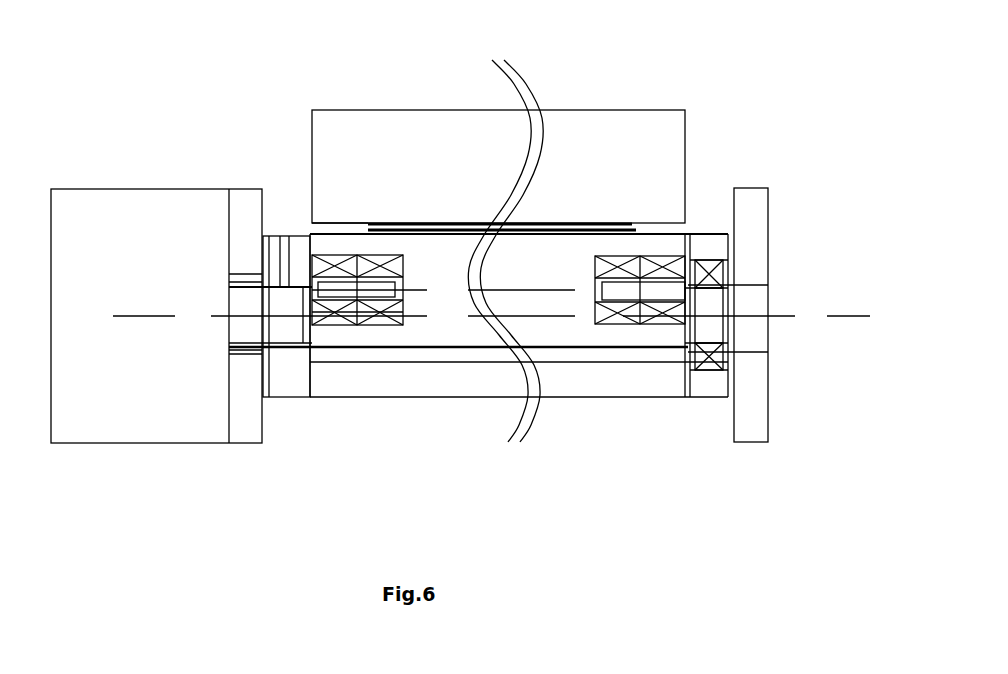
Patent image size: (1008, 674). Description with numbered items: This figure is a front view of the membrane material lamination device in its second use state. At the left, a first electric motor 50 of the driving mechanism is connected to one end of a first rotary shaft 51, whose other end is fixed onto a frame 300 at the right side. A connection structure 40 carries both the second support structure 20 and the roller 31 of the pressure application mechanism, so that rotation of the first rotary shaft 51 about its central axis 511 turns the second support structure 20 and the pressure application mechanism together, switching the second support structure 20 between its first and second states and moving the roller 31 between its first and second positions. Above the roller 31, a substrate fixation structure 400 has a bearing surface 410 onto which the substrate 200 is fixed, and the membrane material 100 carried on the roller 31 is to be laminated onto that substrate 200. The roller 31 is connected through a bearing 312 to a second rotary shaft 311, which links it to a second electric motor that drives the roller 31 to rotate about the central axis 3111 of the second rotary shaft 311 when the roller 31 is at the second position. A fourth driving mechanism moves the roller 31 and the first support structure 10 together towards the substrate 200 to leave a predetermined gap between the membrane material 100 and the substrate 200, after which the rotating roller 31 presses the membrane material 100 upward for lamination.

The first support structure 10 is at (310, 233).
The second support structure 20 is at (665, 379).
The roller 31 is at (657, 247).
The second rotary shaft 311 is at (373, 295).
The bearing 312 is at (332, 313).
The central axis of the second rotary shaft 3111 is at (520, 290).
The connection structure 40 is at (557, 355).
The first electric motor 50 is at (165, 237).
The first rotary shaft 51 is at (710, 303).
The central axis of the first rotary shaft 511 is at (522, 316).
The membrane material 100 is at (637, 229).
The substrate 200 is at (632, 223).
The frame 300 is at (752, 390).
The substrate fixation structure 400 is at (378, 155).
The bearing surface 410 is at (355, 223).